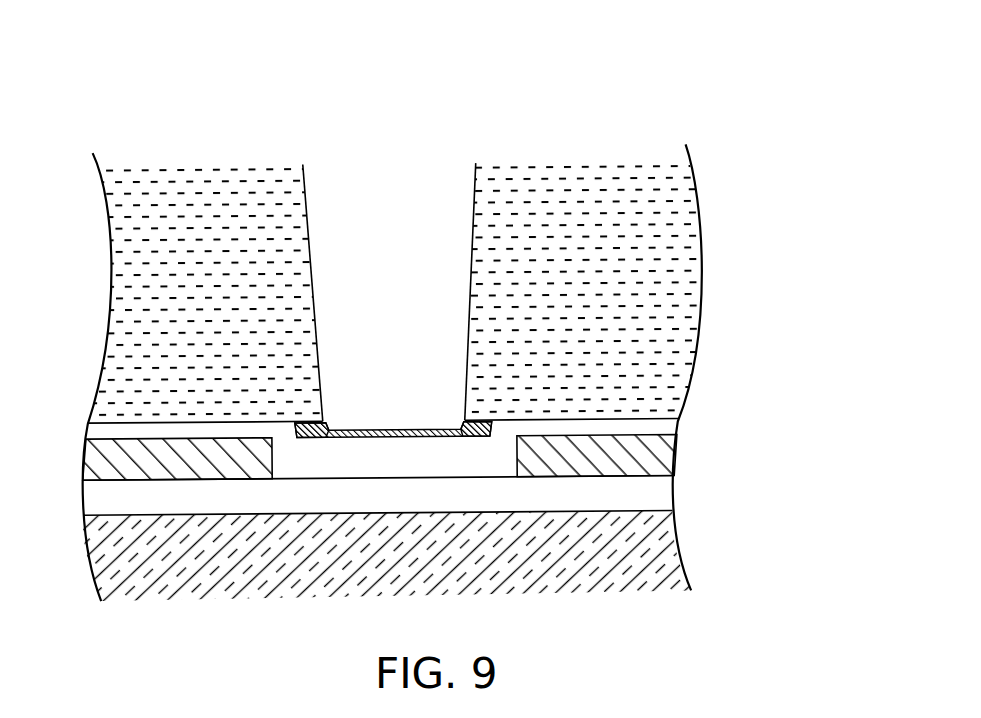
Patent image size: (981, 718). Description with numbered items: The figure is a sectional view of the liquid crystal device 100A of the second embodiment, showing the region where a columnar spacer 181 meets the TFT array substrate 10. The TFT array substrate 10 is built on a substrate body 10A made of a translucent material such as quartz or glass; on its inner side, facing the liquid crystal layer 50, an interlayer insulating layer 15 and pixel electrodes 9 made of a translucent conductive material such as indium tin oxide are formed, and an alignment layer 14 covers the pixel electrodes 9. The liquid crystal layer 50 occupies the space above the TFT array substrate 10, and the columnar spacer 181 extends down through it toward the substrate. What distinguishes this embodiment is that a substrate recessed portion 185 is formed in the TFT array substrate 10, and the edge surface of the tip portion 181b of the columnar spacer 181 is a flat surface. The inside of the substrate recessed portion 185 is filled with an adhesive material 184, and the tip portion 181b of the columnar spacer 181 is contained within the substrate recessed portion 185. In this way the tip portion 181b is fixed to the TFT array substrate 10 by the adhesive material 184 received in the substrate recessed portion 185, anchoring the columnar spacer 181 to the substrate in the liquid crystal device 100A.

The liquid crystal device 100A is at (748, 105).
The columnar spacer 181 is at (446, 165).
The liquid crystal layer 50 is at (698, 287).
The alignment layer 14 is at (673, 423).
The pixel electrodes 9 is at (673, 452).
The interlayer insulating layer 15 is at (672, 490).
The substrate body 10A is at (673, 545).
The TFT array substrate 10 is at (402, 507).
The tip portion 181b is at (395, 428).
The substrate recessed portion 185 is at (321, 437).
The adhesive material 184 is at (477, 437).